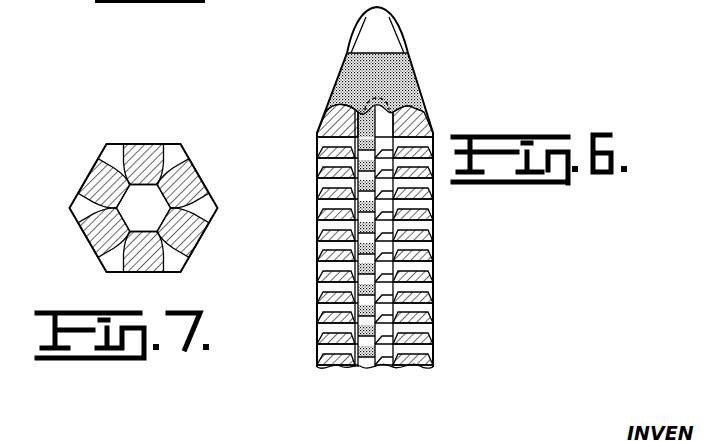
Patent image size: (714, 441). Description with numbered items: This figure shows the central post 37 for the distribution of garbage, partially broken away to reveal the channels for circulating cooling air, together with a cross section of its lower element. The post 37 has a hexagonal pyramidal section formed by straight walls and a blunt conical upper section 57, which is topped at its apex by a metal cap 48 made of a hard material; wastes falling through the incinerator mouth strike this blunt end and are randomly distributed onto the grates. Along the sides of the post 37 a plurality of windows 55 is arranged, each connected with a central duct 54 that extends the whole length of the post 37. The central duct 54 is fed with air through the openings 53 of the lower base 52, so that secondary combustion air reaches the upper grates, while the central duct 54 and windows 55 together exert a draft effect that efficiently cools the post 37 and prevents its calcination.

In FIG. 6, the post 37 is at (421, 78).
In FIG. 6, the metal cap 48 is at (383, 38).
In FIG. 6, the blunt conical upper section 57 is at (332, 86).
In FIG. 6, the central duct 54 is at (382, 118).
In FIG. 7, the central duct 54 is at (148, 209).
In FIG. 6, the windows 55 is at (410, 218).
In FIG. 7, the lower base 52 is at (136, 150).
In FIG. 7, the openings 53 is at (172, 158).